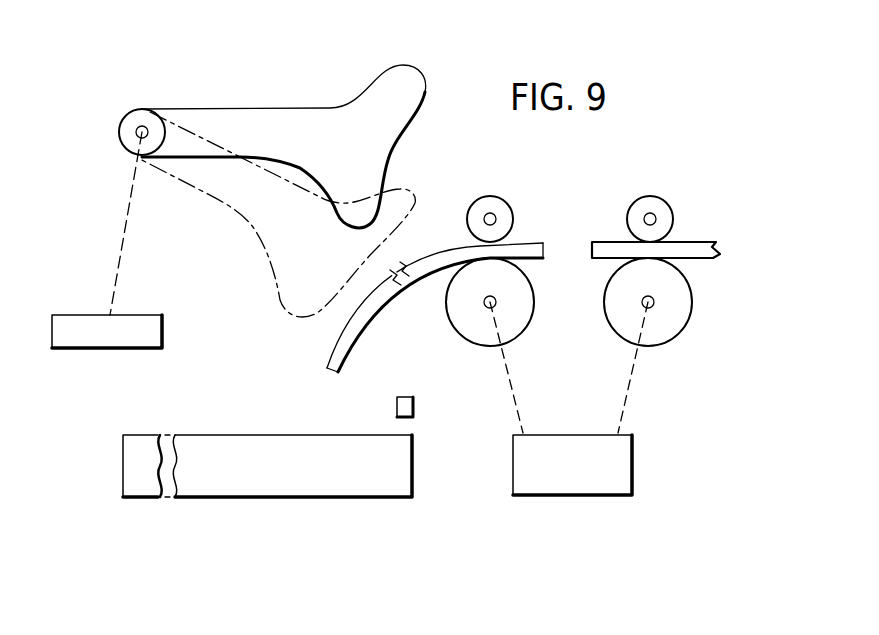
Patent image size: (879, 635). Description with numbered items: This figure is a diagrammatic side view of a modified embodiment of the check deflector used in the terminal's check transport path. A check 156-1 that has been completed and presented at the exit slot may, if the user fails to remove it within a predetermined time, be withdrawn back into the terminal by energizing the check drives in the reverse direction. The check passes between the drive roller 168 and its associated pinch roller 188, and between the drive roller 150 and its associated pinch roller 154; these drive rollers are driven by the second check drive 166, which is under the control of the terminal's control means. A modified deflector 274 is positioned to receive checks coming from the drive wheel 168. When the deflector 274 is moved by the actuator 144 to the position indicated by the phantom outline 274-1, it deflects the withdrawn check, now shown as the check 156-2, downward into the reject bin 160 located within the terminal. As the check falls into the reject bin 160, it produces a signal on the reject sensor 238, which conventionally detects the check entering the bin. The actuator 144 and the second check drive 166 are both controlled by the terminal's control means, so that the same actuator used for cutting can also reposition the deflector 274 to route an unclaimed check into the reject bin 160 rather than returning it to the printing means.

The modified deflector 274 is at (242, 112).
The deflector position 274-1 is at (267, 247).
The actuator 144 is at (95, 348).
The withdrawn check 156-2 is at (320, 355).
The pinch roller 154 is at (492, 202).
The drive roller 150 is at (507, 327).
The check 156-1 is at (602, 242).
The pinch roller 188 is at (657, 200).
The drive roller 168 is at (627, 327).
The check drive #2 166 is at (552, 495).
The reject bin 160 is at (217, 487).
The reject sensor 238 is at (397, 405).